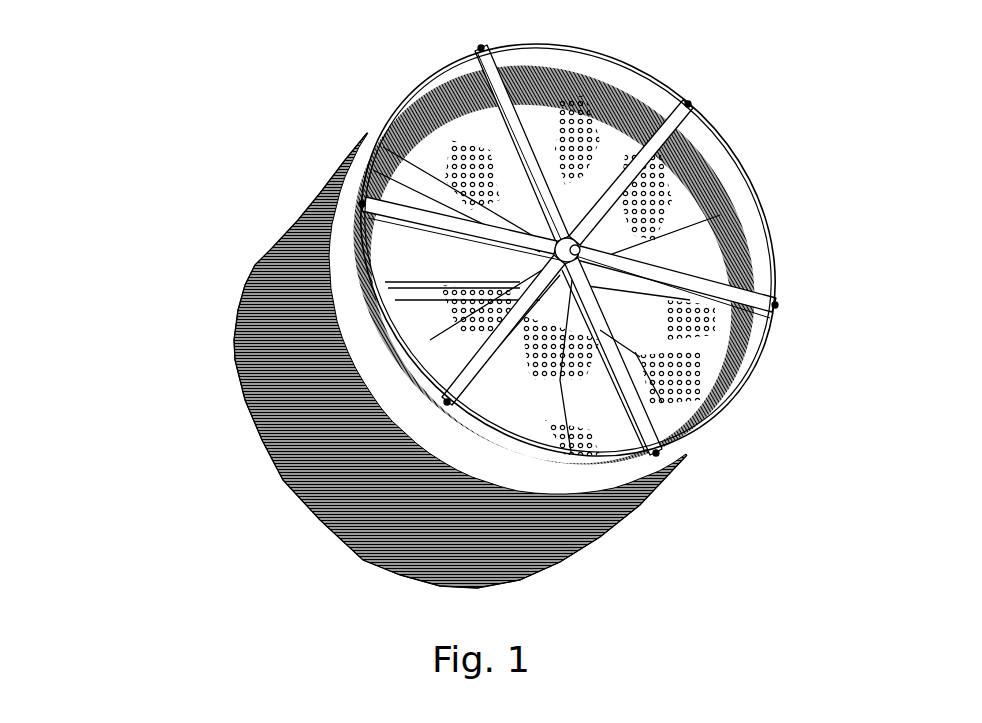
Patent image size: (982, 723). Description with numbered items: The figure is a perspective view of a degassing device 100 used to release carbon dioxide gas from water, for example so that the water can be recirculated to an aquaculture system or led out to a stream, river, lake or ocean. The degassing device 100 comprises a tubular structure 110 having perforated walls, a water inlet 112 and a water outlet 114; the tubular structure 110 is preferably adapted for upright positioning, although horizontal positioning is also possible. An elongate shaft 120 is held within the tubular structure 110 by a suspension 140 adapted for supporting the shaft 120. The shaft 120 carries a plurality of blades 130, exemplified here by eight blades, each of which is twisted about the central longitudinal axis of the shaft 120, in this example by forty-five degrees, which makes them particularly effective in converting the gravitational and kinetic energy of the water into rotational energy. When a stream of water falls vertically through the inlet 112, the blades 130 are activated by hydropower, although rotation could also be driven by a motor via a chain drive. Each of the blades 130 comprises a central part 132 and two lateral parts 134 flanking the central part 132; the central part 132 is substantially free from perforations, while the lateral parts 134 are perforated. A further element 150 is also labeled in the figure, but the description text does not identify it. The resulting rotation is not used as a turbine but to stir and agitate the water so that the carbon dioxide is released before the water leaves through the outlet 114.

The degassing device 100 is at (943, 55).
The tubular structure 110 is at (250, 263).
The water inlet 112 is at (693, 147).
The water outlet 114 is at (270, 512).
The elongate shaft 120 is at (565, 245).
The blades 130 is at (675, 348).
The central part 132 is at (660, 233).
The lateral parts 134 is at (665, 180).
The suspension 140 is at (647, 424).
The inner screen 150 is at (618, 117).